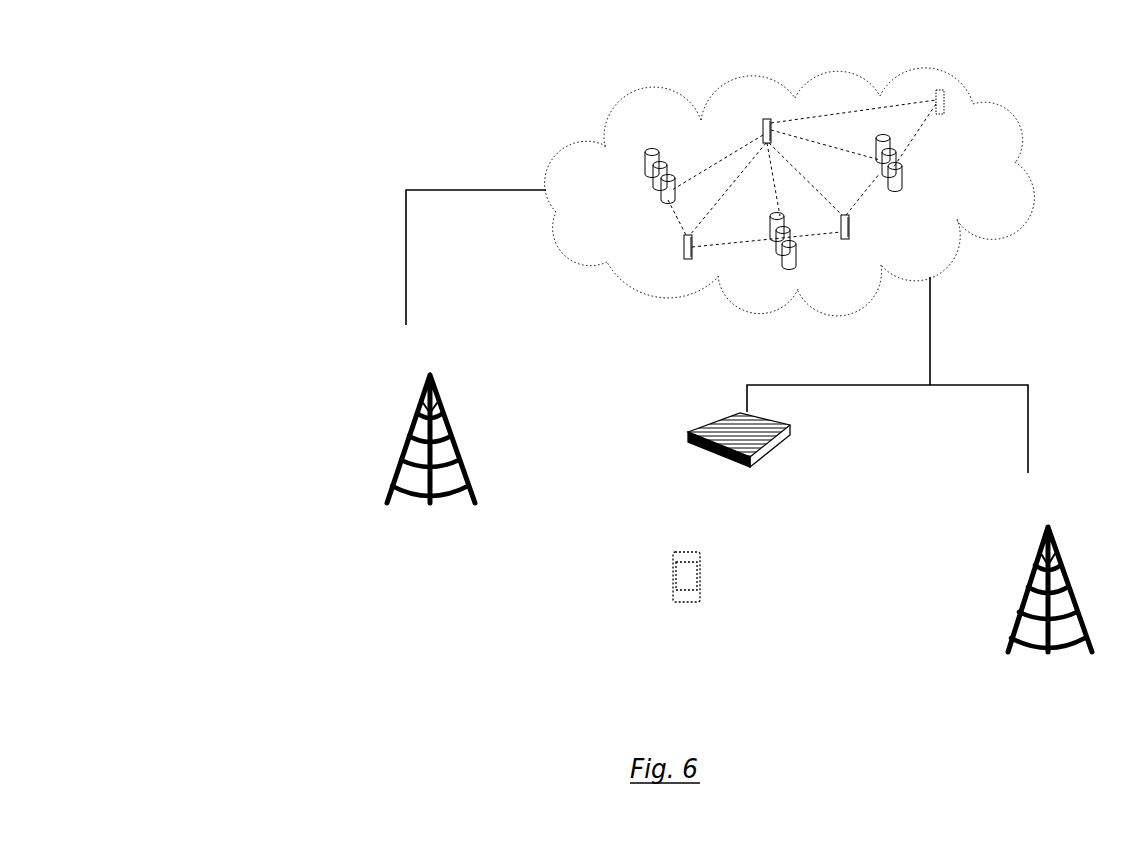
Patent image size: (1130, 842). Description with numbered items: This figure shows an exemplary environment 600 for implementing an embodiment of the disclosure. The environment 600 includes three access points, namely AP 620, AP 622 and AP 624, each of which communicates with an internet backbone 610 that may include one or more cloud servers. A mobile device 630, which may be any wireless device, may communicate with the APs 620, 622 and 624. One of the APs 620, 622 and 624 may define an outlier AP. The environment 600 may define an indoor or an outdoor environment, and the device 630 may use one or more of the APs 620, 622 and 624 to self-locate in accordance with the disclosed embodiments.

The environment 600 is at (230, 98).
The internet backbone 610 is at (1033, 196).
The AP 620 is at (689, 411).
The AP 622 is at (388, 439).
The AP 624 is at (1058, 472).
The mobile device 630 is at (673, 598).